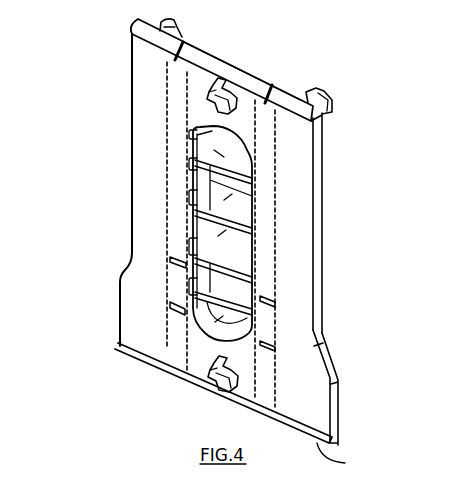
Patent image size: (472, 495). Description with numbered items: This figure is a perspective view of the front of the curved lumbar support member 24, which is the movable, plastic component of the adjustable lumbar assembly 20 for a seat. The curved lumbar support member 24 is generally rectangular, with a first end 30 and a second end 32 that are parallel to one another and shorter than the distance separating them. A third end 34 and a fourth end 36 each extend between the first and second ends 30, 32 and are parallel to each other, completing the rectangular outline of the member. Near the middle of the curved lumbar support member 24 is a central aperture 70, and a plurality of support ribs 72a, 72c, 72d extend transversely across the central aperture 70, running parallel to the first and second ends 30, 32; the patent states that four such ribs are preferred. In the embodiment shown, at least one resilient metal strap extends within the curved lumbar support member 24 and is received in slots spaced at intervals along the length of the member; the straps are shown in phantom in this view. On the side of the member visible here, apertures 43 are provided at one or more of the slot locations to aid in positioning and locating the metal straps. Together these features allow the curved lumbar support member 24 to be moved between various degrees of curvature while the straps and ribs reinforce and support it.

The adjustable lumbar assembly 20 is at (347, 154).
The curved lumbar support member 24 is at (321, 229).
The first end 30 is at (261, 64).
The second end 32 is at (345, 463).
The third end 34 is at (323, 300).
The fourth end 36 is at (132, 192).
The apertures 43 is at (177, 257).
The central aperture 70 is at (222, 230).
The support rib 72a is at (200, 129).
The support rib 72c is at (192, 268).
The support rib 72d is at (197, 284).